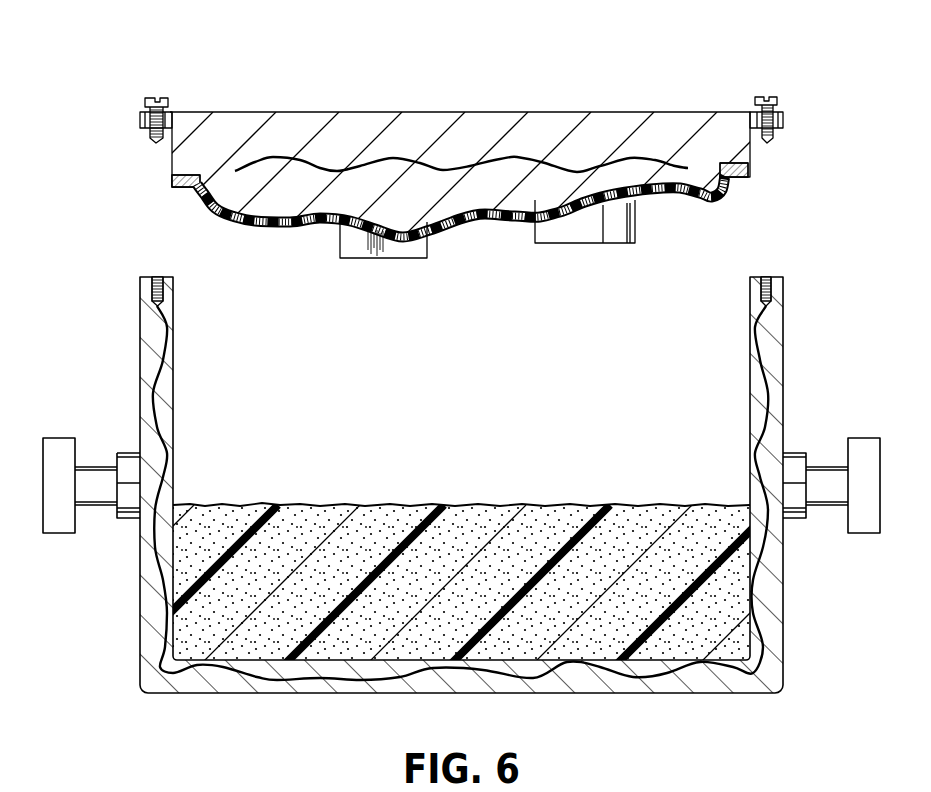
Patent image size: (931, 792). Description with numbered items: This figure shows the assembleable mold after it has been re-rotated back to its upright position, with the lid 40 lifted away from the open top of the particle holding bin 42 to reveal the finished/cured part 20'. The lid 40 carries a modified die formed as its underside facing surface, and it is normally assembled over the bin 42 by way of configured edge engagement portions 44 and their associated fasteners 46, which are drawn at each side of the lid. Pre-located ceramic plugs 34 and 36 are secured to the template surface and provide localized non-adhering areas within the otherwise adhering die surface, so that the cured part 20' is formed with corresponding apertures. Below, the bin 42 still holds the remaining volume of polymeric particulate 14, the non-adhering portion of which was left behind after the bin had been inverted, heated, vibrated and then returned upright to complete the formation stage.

The particulate 14 is at (392, 515).
The part 20' is at (470, 212).
The ceramic plug 34 is at (582, 237).
The ceramic plug 36 is at (395, 250).
The lid 40 is at (362, 123).
The particle holding bin 42 is at (147, 368).
The edge engagement portions 44 is at (140, 117).
The fasteners 46 is at (150, 97).